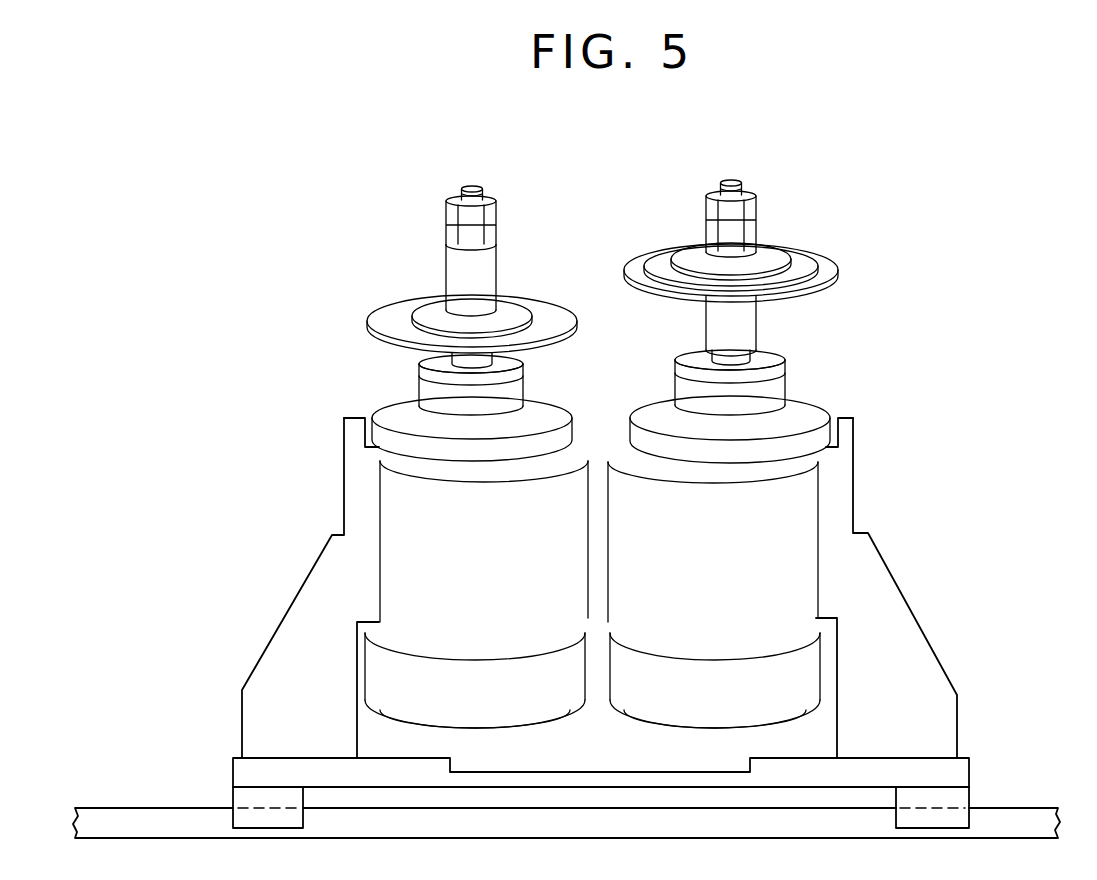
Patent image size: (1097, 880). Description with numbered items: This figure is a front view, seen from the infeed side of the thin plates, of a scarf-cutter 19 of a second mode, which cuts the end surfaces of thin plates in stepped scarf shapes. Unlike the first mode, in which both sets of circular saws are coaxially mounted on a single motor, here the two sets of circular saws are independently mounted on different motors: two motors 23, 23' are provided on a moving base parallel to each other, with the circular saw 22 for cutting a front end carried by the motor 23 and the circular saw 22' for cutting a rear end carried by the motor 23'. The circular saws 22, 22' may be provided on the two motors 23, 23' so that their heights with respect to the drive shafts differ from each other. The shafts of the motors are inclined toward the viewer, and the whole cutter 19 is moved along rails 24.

The cutter 19 is at (822, 183).
The circular saw for cutting a front end 22 is at (799, 268).
The circular saw for cutting a rear end 22' is at (411, 269).
The motor 23 is at (786, 539).
The motor 23' is at (416, 540).
The rails 24 is at (123, 820).